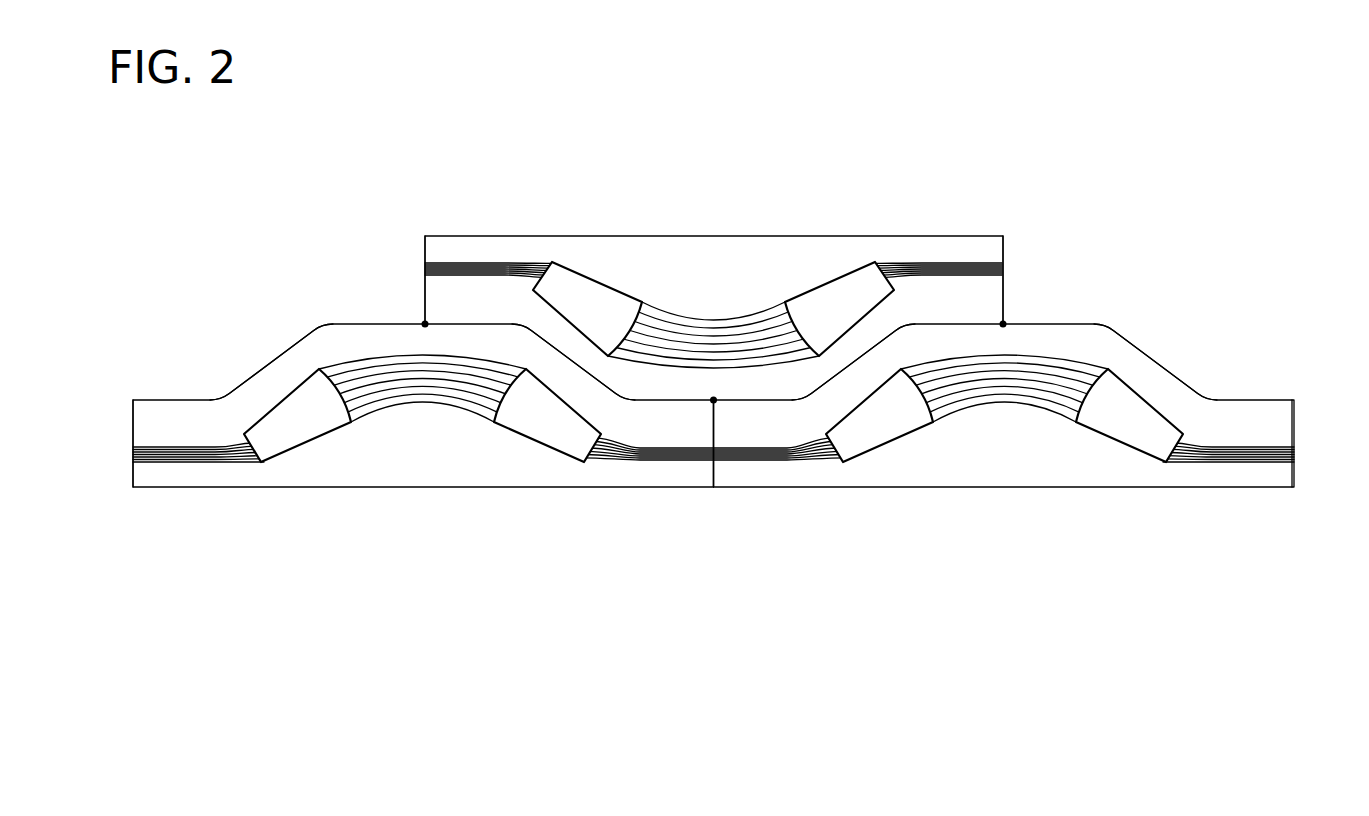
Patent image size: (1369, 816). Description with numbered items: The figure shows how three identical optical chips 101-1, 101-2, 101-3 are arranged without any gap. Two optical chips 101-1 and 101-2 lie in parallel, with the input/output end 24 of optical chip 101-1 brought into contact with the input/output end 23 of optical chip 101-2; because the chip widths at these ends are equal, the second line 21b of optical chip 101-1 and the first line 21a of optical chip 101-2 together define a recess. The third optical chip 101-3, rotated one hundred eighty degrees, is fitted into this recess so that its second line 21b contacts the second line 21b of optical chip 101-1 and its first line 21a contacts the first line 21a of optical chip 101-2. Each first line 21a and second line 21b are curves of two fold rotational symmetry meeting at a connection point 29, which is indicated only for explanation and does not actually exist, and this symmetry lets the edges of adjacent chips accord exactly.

The optical chip 101-1 is at (170, 399).
The optical chip 101-2 is at (1257, 399).
The optical chip 101-3 is at (437, 236).
The first line 21a is at (277, 363).
The second line 21b is at (498, 324).
The input/output end 23 is at (133, 454).
The input/output end 24 is at (425, 291).
The connection point 29 is at (425, 324).